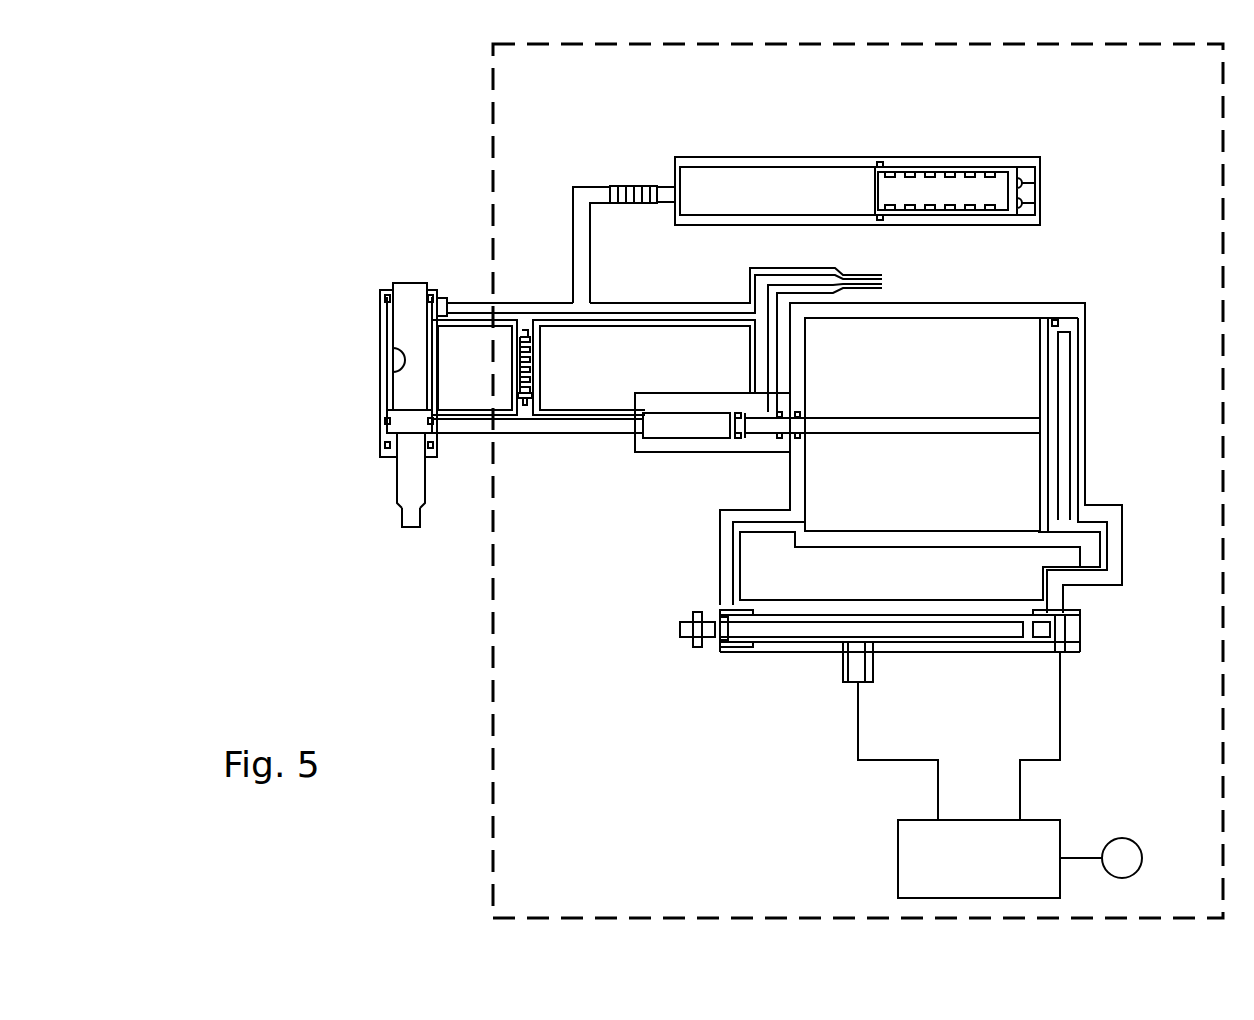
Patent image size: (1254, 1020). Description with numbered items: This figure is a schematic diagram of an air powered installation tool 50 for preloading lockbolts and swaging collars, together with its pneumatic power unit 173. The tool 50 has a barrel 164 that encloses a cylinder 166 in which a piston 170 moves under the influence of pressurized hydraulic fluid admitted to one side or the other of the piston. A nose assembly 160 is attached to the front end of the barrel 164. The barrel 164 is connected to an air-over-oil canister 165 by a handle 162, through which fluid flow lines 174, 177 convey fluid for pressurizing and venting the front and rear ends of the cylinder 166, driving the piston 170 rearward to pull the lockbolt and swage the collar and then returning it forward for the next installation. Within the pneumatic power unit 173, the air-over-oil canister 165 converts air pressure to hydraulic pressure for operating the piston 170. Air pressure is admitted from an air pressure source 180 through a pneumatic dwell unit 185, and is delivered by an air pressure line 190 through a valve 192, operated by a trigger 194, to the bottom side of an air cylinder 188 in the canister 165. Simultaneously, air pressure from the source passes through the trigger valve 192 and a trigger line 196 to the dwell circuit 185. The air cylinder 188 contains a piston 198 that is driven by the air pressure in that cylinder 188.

The installation tool 50 is at (330, 321).
The nose assembly 160 is at (434, 484).
The handle 162 is at (457, 303).
The barrel 164 is at (387, 437).
The air-over-oil canister 165 is at (1008, 274).
The cylinder 166 is at (397, 375).
The piston 170 is at (413, 423).
The pneumatic power unit 173 is at (445, 845).
The fluid flow line 174 is at (503, 422).
The fluid flow line 177 is at (442, 303).
The air pressure source 180 is at (1142, 852).
The pneumatic dwell unit 185 is at (1062, 830).
The air cylinder 188 is at (1047, 303).
The air pressure line 190 is at (858, 737).
The valve 192 is at (1043, 653).
The trigger 194 is at (690, 648).
The trigger line 196 is at (1062, 710).
The piston 198 is at (1047, 402).